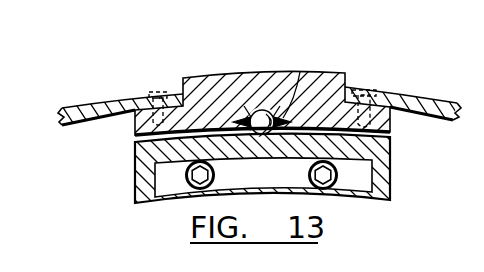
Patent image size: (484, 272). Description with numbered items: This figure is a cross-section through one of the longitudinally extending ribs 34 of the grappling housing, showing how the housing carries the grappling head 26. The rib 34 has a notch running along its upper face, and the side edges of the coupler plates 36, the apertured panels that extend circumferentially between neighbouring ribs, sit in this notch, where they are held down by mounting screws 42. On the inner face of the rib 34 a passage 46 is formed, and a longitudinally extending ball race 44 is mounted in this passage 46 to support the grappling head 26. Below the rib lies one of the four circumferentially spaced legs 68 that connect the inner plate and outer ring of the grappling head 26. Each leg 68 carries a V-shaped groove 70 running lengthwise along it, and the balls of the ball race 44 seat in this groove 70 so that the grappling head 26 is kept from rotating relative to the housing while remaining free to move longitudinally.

The grappling head 26 is at (396, 165).
The longitudinally extending rib 34 is at (322, 87).
The coupler plate 36 is at (87, 110).
The mounting screw 42 is at (152, 93).
The ball race 44 is at (260, 118).
The passage 46 is at (300, 72).
The leg 68 is at (142, 170).
The V-shaped groove 70 is at (258, 138).